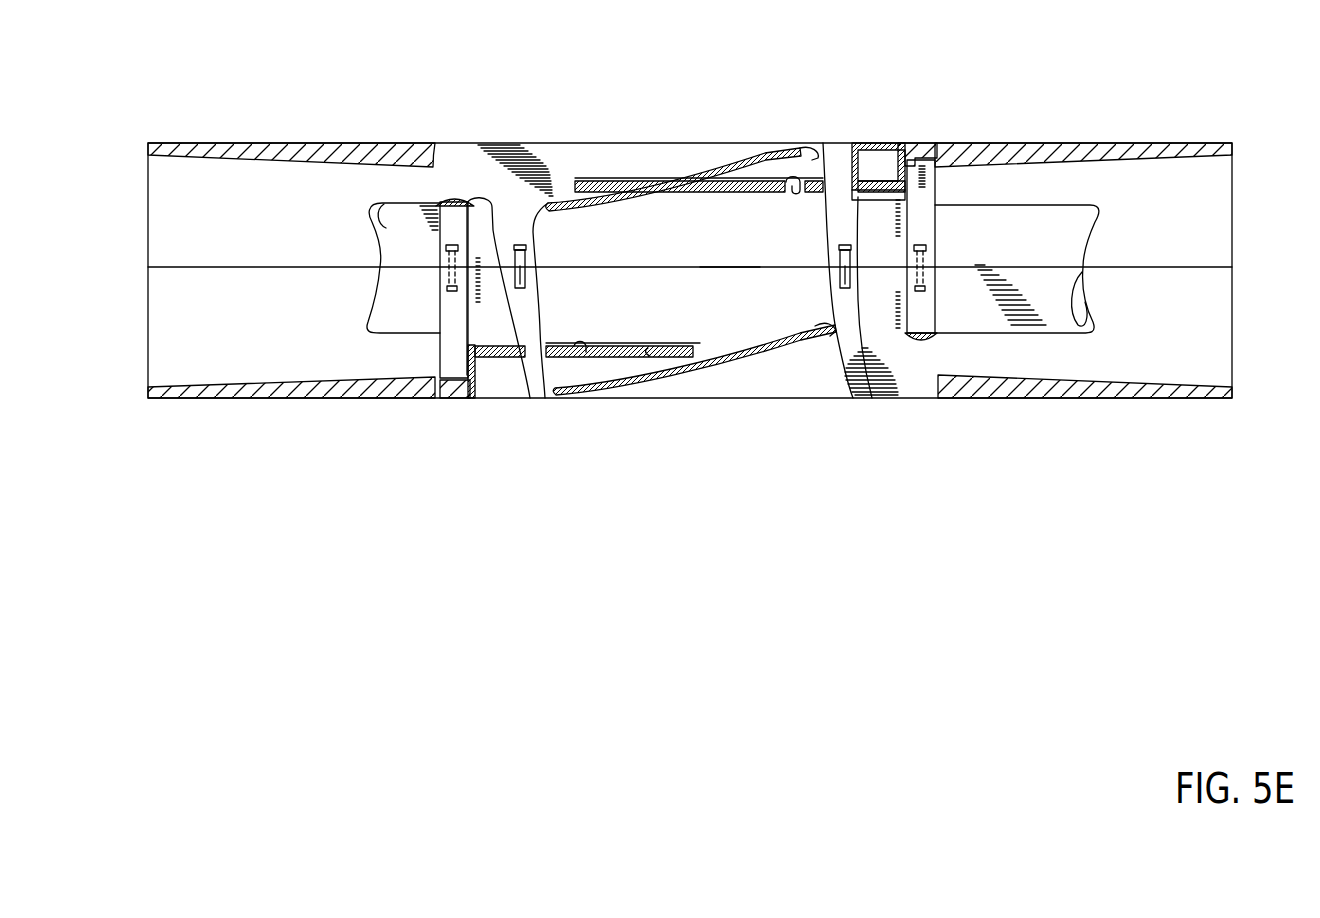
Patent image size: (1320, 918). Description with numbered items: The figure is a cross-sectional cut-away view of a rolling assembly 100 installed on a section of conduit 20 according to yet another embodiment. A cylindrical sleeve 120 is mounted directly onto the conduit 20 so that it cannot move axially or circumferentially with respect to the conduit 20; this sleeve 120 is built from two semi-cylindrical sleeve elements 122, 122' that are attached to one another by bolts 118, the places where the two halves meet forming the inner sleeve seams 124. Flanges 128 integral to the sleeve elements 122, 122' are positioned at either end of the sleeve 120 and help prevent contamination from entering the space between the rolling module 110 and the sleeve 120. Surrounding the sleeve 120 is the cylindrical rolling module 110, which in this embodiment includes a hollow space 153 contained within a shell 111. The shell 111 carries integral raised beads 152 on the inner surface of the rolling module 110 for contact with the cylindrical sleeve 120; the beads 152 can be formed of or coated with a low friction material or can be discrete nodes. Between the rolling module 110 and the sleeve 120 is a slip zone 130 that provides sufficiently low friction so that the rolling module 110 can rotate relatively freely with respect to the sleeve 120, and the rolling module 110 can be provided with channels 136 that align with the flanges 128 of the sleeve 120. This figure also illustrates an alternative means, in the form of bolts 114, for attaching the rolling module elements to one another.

The rolling assembly 100 is at (777, 87).
The rolling module 110 is at (689, 127).
The shell 111 is at (770, 152).
The bolts 114 is at (521, 292).
The bolts 118 is at (928, 245).
The cylindrical sleeve 120 is at (702, 210).
The sleeve element 122 is at (740, 214).
The sleeve element 122' is at (587, 316).
The inner sleeve seams 124 is at (660, 347).
The flanges 128 is at (450, 313).
The slip zone 130 is at (713, 270).
The channels 136 is at (908, 158).
The raised beads 152 is at (601, 205).
The hollow space 153 is at (872, 162).
The conduit 20 is at (1018, 282).